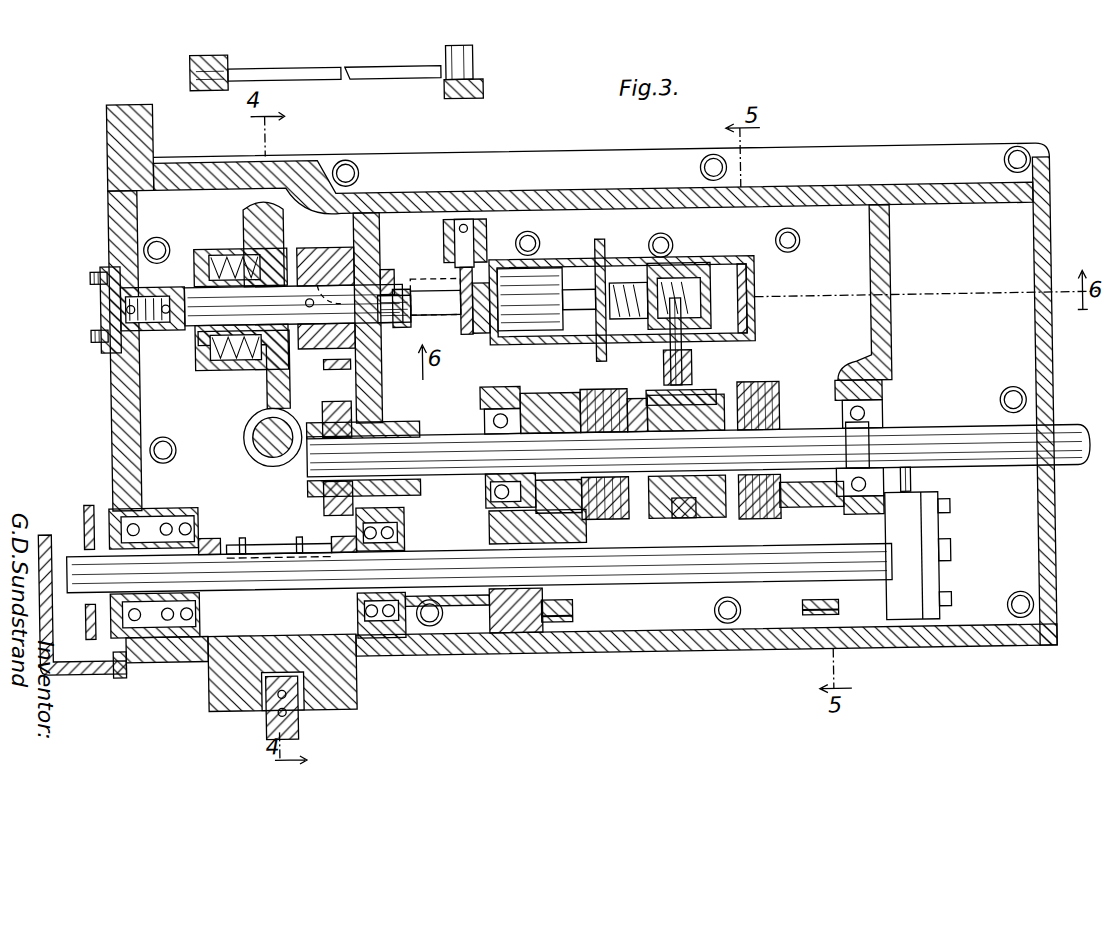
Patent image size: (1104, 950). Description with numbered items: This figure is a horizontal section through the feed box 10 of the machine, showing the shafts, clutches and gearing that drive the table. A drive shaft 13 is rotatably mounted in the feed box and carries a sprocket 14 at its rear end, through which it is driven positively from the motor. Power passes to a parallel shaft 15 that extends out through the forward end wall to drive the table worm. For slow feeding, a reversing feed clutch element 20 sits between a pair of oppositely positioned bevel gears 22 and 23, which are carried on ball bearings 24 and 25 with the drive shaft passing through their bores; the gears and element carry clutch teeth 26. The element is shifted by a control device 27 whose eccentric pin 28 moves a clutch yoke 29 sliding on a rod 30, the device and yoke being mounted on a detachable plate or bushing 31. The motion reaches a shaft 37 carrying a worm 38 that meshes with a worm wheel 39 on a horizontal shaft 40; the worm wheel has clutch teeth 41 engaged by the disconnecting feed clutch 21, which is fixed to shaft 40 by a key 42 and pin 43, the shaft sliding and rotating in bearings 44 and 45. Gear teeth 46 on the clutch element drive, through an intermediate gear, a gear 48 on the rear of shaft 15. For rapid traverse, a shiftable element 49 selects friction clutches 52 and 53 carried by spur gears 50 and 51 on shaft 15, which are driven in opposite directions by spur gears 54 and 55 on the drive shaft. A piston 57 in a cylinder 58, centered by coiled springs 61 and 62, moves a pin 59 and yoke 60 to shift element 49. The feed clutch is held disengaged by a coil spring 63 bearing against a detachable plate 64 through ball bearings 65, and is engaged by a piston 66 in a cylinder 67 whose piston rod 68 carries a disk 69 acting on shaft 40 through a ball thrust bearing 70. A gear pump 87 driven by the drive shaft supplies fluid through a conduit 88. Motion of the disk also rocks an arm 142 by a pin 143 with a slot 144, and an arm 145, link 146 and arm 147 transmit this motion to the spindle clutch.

The feed box 10 is at (637, 645).
The drive shaft 13 is at (464, 585).
The sprocket 14 is at (95, 533).
The shaft 15 is at (447, 473).
The reversing feed clutch element 20 is at (272, 540).
The disconnecting feed clutch 21 is at (320, 345).
The bevel gear 22 is at (208, 533).
The bevel gear 23 is at (340, 533).
The ball bearing 24 is at (190, 503).
The ball bearing 25 is at (403, 532).
The clutch teeth 26 is at (298, 533).
The control device 27 is at (292, 732).
The eccentric pin 28 is at (400, 640).
The clutch yoke 29 is at (355, 618).
The rod 30 is at (218, 630).
The detachable plate or bushing 31 is at (245, 700).
The shaft 37 is at (268, 448).
The worm 38 is at (248, 446).
The worm wheel 39 is at (268, 404).
The shaft 40 is at (205, 350).
The clutch teeth 41 is at (290, 265).
The key 42 is at (340, 300).
The pin 43 is at (308, 299).
The bearing 44 is at (388, 267).
The bearing 45 is at (205, 280).
The gear teeth 46 is at (335, 366).
The gear 48 is at (352, 405).
The shiftable element 49 is at (701, 520).
The spur gear 50 is at (550, 393).
The spur gear 51 is at (825, 400).
The friction clutch 52 is at (610, 500).
The friction clutch 53 is at (762, 500).
The spur gear 54 is at (570, 611).
The spur gear 55 is at (800, 611).
The piston 57 is at (685, 265).
The cylinder 58 is at (712, 259).
The pin 59 is at (683, 352).
The yoke 60 is at (693, 378).
The coiled spring 61 is at (630, 284).
The coiled spring 62 is at (748, 267).
The coil spring 63 is at (95, 278).
The detachable plate 64 is at (103, 321).
The ball bearings 65 is at (168, 324).
The piston 66 is at (603, 240).
The cylinder 67 is at (540, 268).
The piston rod 68 is at (483, 332).
The disk 69 is at (458, 313).
The ball thrust bearing 70 is at (408, 287).
The gear pump 87 is at (916, 540).
The conduit 88 is at (911, 490).
The arm 142 is at (447, 236).
The pin 143 is at (463, 283).
The slot 144 is at (420, 305).
The arm 145 is at (452, 93).
The link 146 is at (375, 64).
The arm 147 is at (222, 55).